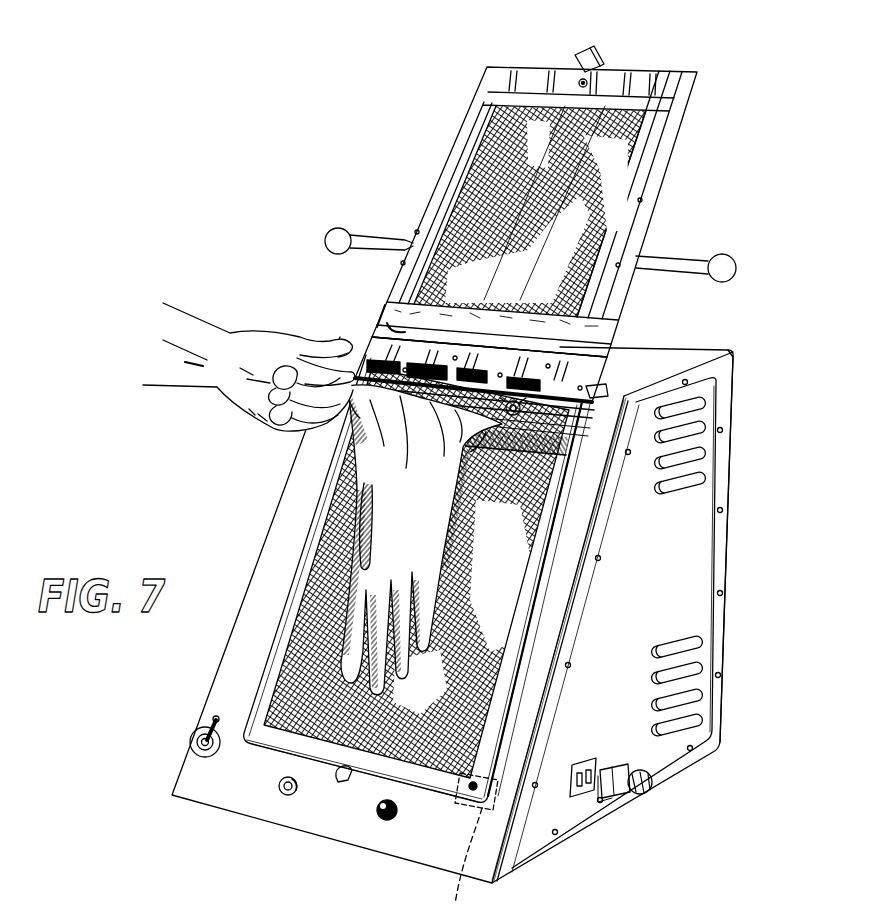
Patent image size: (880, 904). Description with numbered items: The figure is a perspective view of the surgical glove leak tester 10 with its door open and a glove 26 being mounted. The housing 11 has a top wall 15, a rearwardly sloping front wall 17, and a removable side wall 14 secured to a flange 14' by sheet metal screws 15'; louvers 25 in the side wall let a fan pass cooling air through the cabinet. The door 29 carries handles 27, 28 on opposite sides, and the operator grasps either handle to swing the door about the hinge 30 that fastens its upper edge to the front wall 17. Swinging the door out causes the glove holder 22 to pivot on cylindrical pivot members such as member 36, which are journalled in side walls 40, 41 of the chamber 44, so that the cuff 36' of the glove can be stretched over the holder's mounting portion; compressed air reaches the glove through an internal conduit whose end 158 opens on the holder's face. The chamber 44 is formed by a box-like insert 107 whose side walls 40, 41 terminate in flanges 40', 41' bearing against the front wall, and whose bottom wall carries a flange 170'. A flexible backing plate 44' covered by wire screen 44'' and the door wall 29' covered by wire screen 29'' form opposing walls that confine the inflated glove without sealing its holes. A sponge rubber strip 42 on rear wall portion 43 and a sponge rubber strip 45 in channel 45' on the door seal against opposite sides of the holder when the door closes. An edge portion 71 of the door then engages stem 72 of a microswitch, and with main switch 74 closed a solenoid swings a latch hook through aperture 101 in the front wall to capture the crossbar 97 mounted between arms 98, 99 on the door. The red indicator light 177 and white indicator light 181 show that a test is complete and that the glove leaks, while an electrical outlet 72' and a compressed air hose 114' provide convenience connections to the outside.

The leak tester 10 is at (746, 362).
The housing 11 is at (725, 502).
The side wall 14 is at (644, 625).
The flange 14' is at (570, 639).
The top wall 15 is at (678, 353).
The sheet metal screws 15' is at (657, 607).
The front wall 17 is at (260, 567).
The glove holder 22 is at (526, 412).
The louvers 25 is at (690, 482).
The glove 26 is at (387, 467).
The handle 27 is at (684, 267).
The handle 28 is at (367, 242).
The door 29 is at (548, 212).
The wall 29' is at (573, 211).
The wire screen 29'' is at (528, 209).
The hinge 30 is at (342, 340).
The cylindrical pivot member 36 is at (109, 900).
The cuff 36' is at (481, 369).
The side wall 40 is at (533, 599).
The flange 40' is at (544, 600).
The side wall 41 is at (409, 578).
The flange 41' is at (365, 662).
The sponge rubber strip 42 is at (560, 453).
The rear wall portion 43 is at (563, 437).
The chamber 44 is at (416, 573).
The flexible backing plate 44' is at (567, 640).
The wire screen 44'' is at (526, 482).
The sponge rubber strip 45 is at (509, 329).
The channel 45' is at (374, 312).
The edge portion 71 is at (684, 86).
The stem 72 is at (471, 838).
The electrical outlet 72' is at (565, 791).
The main switch 74 is at (196, 742).
The crossbar 97 is at (582, 54).
The arm 98 is at (596, 64).
The arm 99 is at (580, 61).
The aperture 101 is at (342, 775).
The box-like insert 107 is at (328, 508).
The compressed air hose 114' is at (646, 800).
The end 158 is at (595, 382).
The flange 170' is at (441, 799).
The red indicator light 177 is at (387, 800).
The white indicator light 181 is at (300, 780).